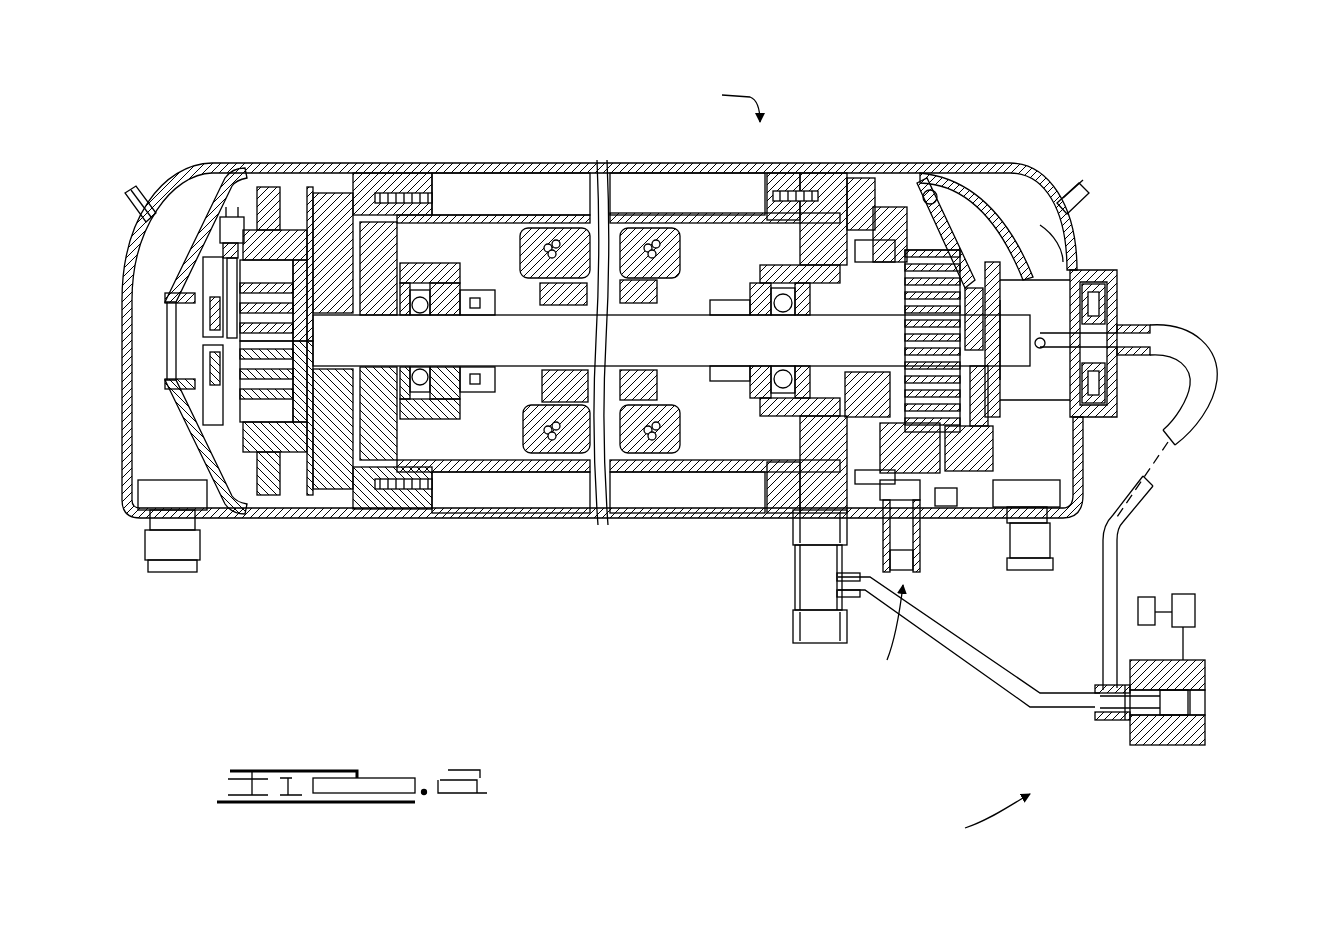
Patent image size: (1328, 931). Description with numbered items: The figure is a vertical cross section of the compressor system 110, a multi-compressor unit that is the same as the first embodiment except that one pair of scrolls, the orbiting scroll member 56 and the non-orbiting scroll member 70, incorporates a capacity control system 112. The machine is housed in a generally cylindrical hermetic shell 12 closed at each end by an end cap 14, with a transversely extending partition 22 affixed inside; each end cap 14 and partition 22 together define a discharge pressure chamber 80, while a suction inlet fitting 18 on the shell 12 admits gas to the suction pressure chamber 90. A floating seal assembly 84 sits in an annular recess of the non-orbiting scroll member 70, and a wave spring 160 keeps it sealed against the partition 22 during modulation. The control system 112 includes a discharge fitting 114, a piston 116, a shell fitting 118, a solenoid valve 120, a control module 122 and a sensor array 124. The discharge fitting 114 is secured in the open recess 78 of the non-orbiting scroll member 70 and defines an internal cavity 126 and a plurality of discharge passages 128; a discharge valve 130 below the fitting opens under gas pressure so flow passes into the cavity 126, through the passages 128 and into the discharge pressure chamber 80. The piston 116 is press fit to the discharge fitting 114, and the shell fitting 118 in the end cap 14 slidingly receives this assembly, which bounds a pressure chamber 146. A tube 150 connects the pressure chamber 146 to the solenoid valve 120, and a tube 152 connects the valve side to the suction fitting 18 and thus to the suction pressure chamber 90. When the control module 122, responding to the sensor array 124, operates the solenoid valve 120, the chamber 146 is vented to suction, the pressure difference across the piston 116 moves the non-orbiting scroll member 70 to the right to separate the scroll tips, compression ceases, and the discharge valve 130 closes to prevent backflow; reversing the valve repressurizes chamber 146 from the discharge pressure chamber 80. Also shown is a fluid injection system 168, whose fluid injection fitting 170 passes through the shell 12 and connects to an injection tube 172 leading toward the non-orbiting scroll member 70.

The compressor system 110 is at (717, 101).
The capacity control system 112 is at (967, 817).
The hermetic shell 12 is at (650, 518).
The end cap 14 is at (1130, 400).
The suction inlet fitting 18 is at (795, 628).
The partition 22 is at (963, 240).
The orbiting scroll member 56 is at (885, 425).
The non-orbiting scroll member 70 is at (903, 350).
The open recess 78 is at (1060, 253).
The discharge pressure chamber 80 is at (1057, 476).
The floating seal assembly 84 is at (1023, 500).
The suction pressure chamber 90 is at (714, 503).
The discharge fitting 114 is at (1075, 360).
The piston 116 is at (1080, 302).
The shell fitting 118 is at (1095, 268).
The solenoid valve 120 is at (1198, 745).
The control module 122 is at (1195, 612).
The sensor array 124 is at (1160, 593).
The internal cavity 126 is at (1040, 348).
The discharge passages 128 is at (1093, 280).
The discharge valve 130 is at (983, 345).
The pressure chamber 146 is at (1085, 313).
The tube 150 is at (1207, 385).
The tube 152 is at (985, 665).
The wave spring 160 is at (1043, 258).
The fluid injection system 168 is at (862, 637).
The fluid injection fitting 170 is at (918, 578).
The injection tube 172 is at (940, 510).